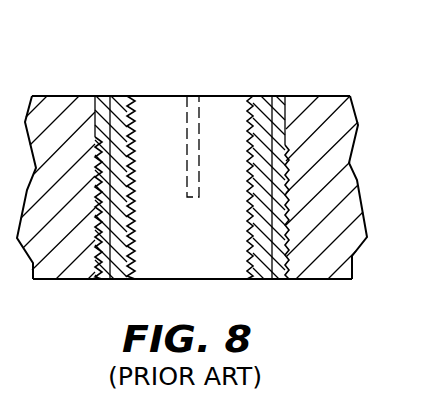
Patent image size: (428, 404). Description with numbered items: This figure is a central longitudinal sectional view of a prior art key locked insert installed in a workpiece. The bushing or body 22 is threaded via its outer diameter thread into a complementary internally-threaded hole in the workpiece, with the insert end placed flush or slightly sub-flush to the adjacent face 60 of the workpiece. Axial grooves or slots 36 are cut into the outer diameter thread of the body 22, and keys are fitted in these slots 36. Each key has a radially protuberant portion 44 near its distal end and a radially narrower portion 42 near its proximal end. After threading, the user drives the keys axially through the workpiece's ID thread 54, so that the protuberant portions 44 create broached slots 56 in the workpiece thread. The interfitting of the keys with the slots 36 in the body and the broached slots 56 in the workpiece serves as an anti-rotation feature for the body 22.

The body 22 is at (248, 234).
The axial grooves or slots 36 is at (269, 108).
The radially narrower portion 42 is at (278, 172).
The radially protuberant portion 44 is at (276, 115).
The ID thread 54 is at (94, 253).
The broached slots 56 is at (98, 116).
The adjacent face 60 is at (58, 96).